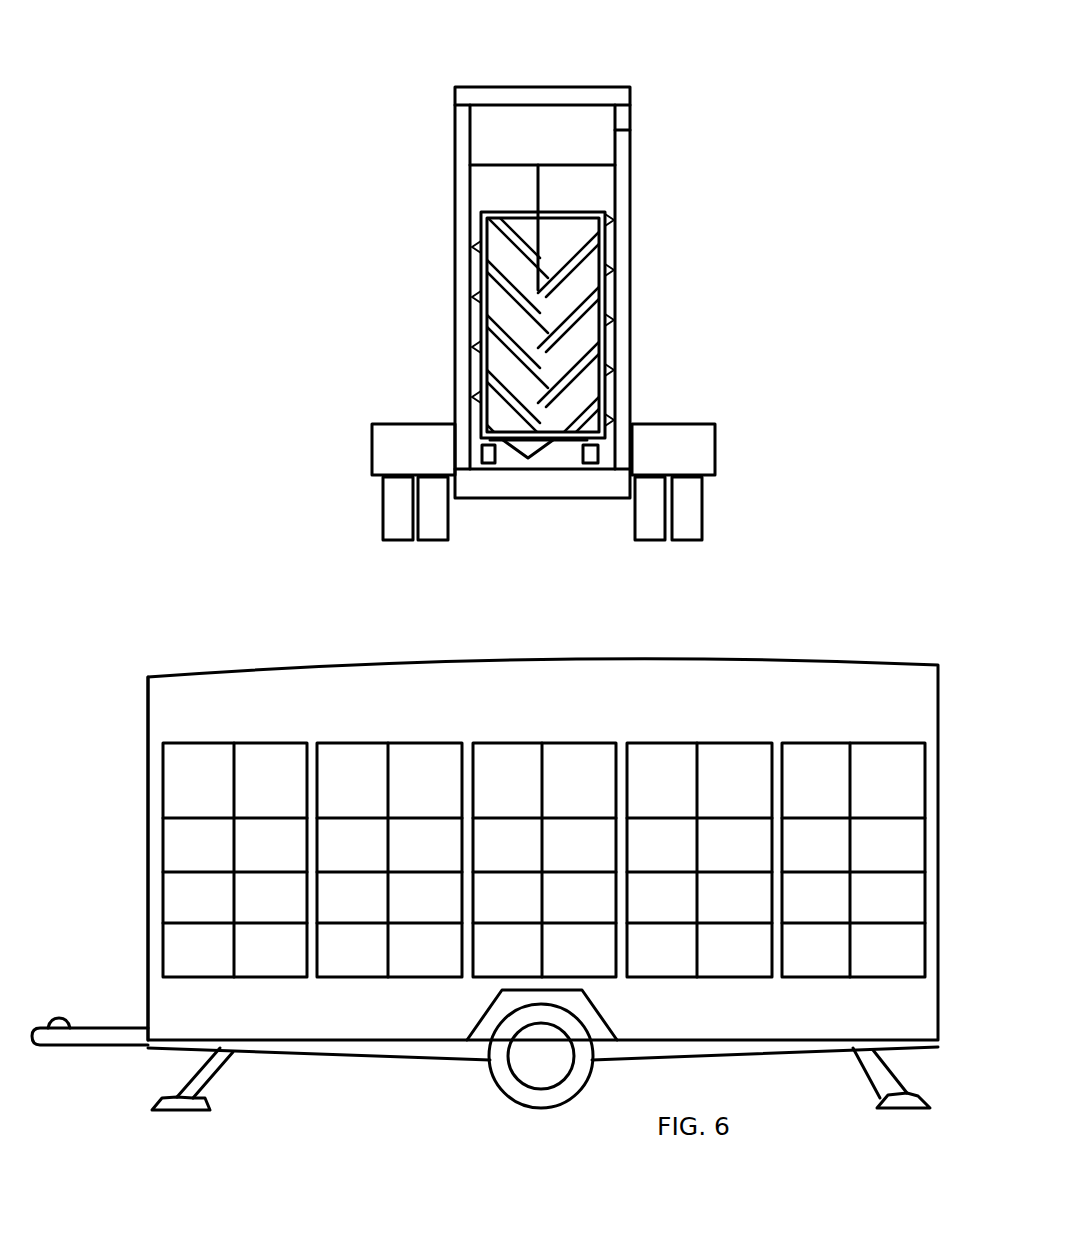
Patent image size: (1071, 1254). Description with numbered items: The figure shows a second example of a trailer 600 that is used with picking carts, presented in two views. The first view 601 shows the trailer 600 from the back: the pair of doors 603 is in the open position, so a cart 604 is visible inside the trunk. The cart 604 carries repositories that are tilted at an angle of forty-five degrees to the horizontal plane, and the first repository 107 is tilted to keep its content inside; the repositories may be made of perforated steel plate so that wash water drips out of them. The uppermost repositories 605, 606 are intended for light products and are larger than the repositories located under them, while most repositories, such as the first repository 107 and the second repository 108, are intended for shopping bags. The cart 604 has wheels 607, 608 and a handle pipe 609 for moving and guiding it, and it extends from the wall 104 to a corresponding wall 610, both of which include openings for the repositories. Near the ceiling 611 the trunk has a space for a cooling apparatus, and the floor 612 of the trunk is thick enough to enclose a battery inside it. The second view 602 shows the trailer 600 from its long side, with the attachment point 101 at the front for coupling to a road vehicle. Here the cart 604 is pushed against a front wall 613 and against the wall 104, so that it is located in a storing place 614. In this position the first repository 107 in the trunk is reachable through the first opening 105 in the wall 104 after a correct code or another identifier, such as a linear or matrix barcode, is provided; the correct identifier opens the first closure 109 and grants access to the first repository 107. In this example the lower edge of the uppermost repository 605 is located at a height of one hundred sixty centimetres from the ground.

The trailer 600 is at (580, 87).
The first view 601 is at (397, 88).
The second view 602 is at (773, 647).
The pair of doors 603 is at (460, 240).
The cart 604 is at (607, 264).
The uppermost repository 605 is at (480, 187).
The uppermost repository 606 is at (603, 183).
The wheel 607 is at (490, 468).
The wheel 608 is at (598, 467).
The handle pipe 609 is at (607, 218).
The corresponding wall 610 is at (628, 327).
The ceiling 611 is at (492, 87).
The floor 612 is at (542, 498).
The front wall 613 is at (147, 705).
The storing place 614 is at (475, 1049).
The attachment point 101 is at (58, 1048).
The wall 104 is at (460, 398).
The first opening 105 is at (280, 842).
The first repository 107 is at (460, 293).
The second repository 108 is at (460, 347).
The first closure 109 is at (629, 838).